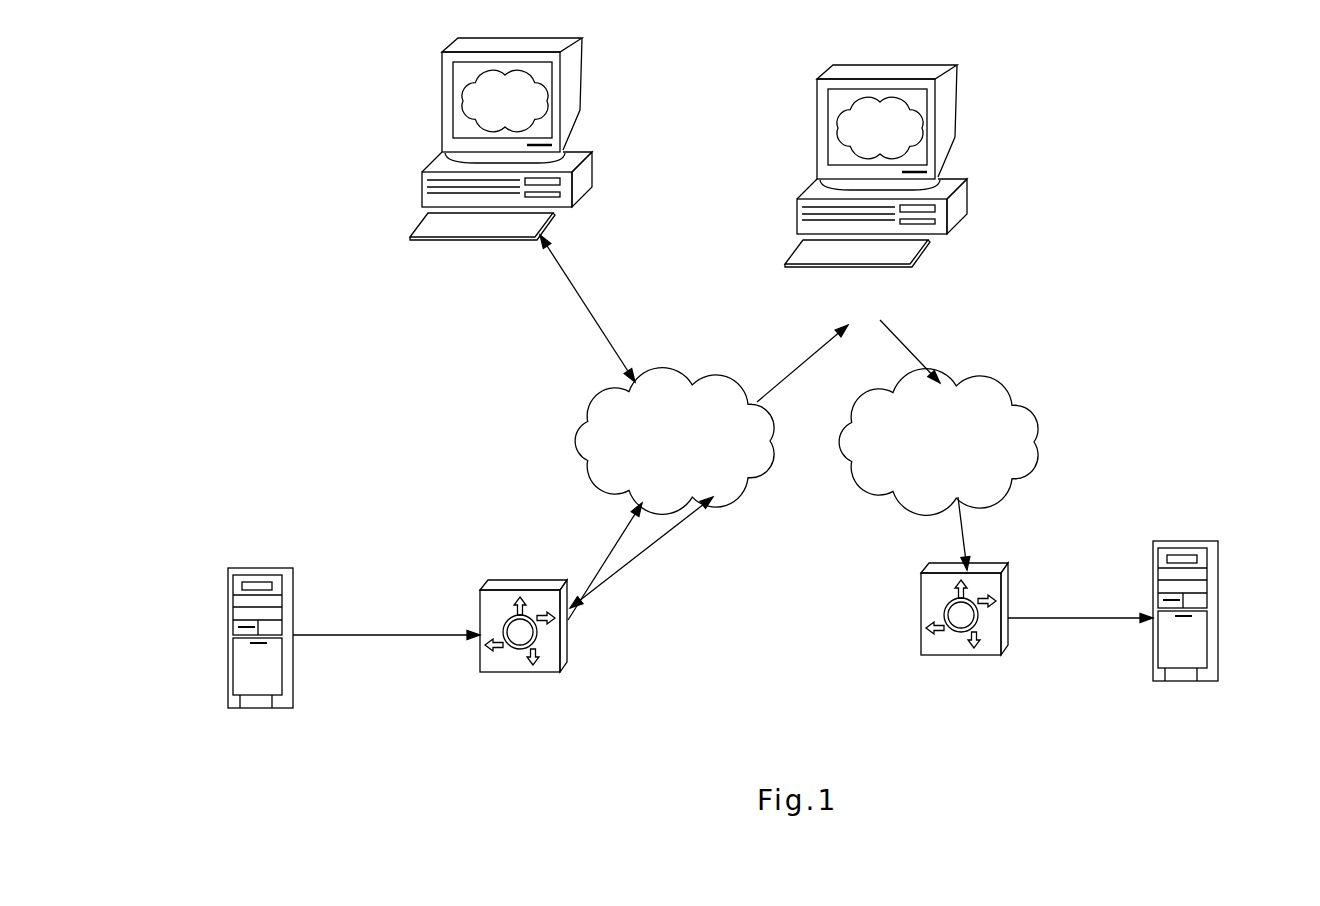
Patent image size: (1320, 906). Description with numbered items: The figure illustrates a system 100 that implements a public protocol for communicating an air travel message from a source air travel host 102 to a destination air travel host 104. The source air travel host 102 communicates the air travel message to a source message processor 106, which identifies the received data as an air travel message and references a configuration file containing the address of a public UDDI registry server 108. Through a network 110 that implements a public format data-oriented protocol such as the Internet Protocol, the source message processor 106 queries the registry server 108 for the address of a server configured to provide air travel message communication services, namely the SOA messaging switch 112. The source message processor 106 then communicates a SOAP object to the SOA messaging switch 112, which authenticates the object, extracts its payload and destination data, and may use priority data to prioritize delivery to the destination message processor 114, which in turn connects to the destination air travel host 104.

The system 100 is at (322, 152).
The source air travel host 102 is at (265, 568).
The destination air travel host 104 is at (1182, 542).
The source message processor 106 is at (530, 580).
The public UDDI registry server 108 is at (580, 114).
The network 110 is at (680, 382).
The SOA messaging switch 112 is at (953, 141).
The destination message processor 114 is at (1008, 580).